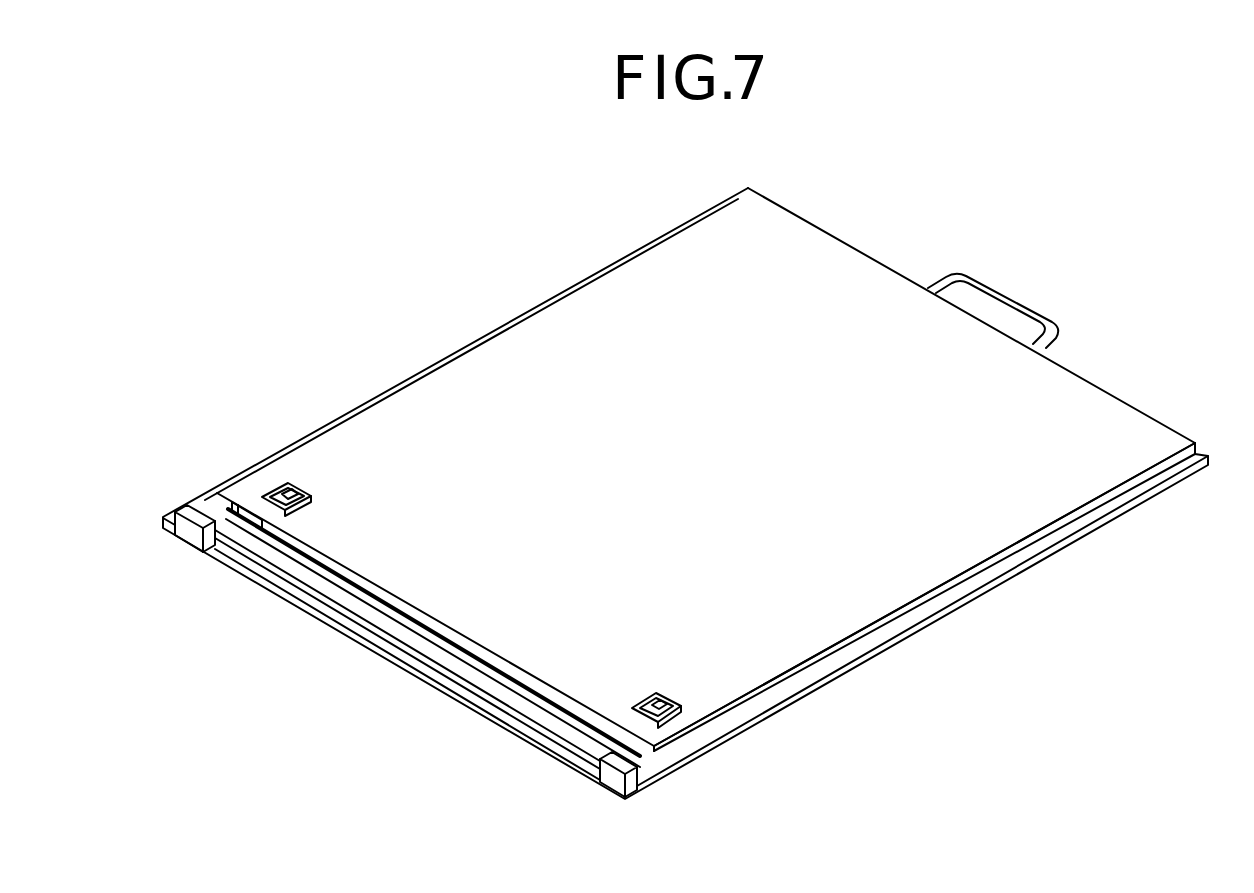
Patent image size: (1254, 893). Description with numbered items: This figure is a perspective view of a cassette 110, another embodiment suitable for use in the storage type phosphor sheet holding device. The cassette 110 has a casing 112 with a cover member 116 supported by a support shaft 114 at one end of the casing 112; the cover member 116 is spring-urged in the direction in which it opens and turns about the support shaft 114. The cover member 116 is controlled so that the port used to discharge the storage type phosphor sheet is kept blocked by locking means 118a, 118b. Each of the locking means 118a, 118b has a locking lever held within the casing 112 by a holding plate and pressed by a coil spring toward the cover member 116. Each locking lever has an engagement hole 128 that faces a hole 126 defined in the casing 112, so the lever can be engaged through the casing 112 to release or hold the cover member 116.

The cassette 110 is at (823, 190).
The casing 112 is at (598, 296).
The support shaft 114 is at (672, 770).
The cover member 116 is at (409, 637).
The locking means 118a is at (668, 724).
The locking means 118b is at (248, 497).
The hole 126 is at (298, 491).
The engagement hole 128 is at (300, 511).